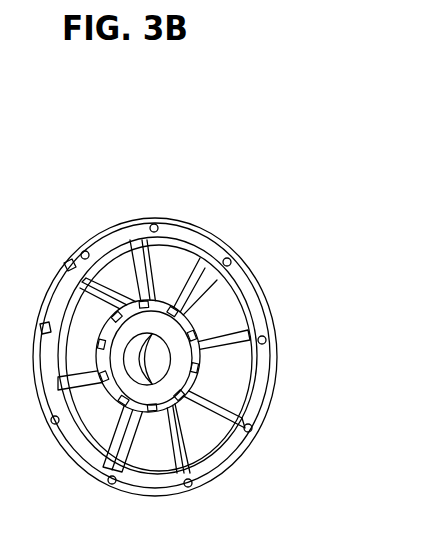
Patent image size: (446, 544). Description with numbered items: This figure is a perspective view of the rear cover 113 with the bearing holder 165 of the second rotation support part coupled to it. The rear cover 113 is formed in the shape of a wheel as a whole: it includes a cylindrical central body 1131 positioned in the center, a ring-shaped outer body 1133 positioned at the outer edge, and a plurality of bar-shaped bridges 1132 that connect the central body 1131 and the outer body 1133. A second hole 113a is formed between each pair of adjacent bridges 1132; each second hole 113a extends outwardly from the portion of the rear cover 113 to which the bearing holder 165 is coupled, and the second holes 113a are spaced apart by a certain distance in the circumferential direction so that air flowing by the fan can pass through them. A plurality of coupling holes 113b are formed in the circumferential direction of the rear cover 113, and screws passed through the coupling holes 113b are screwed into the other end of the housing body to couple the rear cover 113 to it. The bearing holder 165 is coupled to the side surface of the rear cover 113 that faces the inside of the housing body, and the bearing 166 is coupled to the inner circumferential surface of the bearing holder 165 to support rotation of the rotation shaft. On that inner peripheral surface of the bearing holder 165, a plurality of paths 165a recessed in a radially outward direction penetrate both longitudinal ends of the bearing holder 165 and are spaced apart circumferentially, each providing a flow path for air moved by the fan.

The rear cover 113 is at (212, 231).
The second holes 113a is at (217, 309).
The coupling holes 113b is at (267, 337).
The central body 1131 is at (223, 485).
The bridges 1132 is at (261, 418).
The outer body 1133 is at (258, 388).
The bearing holder 165 is at (126, 306).
The paths 165a is at (143, 301).
The bearing 166 is at (136, 385).